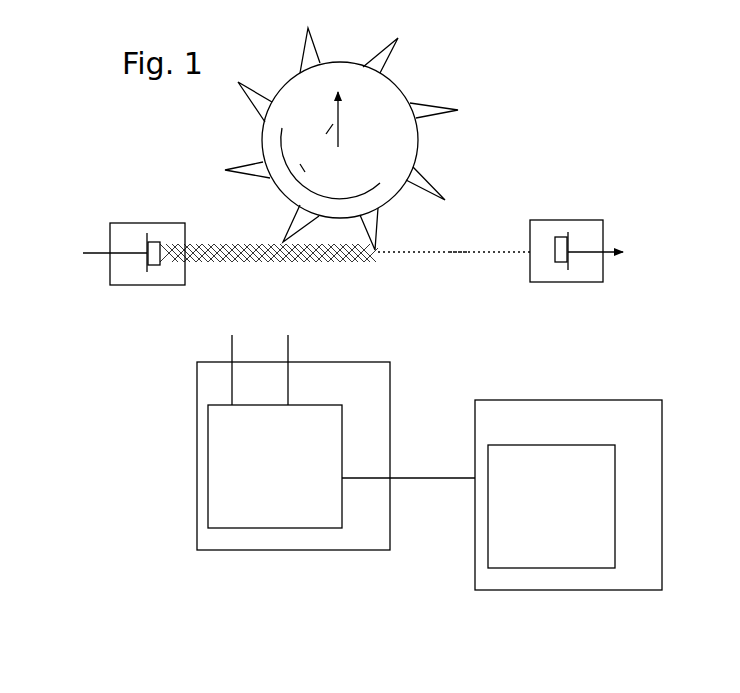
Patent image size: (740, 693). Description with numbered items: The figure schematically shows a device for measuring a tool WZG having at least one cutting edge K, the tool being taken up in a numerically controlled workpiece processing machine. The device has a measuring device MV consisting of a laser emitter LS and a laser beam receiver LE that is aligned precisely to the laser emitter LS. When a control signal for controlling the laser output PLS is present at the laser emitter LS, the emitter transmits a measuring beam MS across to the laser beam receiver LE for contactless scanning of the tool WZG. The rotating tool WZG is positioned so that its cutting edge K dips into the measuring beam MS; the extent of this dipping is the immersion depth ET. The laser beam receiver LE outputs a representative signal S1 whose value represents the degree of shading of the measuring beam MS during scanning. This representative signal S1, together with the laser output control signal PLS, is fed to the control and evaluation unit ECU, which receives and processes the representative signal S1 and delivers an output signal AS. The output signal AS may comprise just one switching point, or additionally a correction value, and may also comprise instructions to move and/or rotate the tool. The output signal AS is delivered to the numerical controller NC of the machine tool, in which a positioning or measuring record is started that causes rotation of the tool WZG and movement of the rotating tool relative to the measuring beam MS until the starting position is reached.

The tool WZG is at (335, 135).
The cutting edge K is at (461, 101).
The measuring device MV is at (532, 133).
The measuring beam MS is at (268, 245).
The immersion depth ET is at (459, 243).
The laser emitter LS is at (134, 288).
The laser beam receiver LE is at (570, 285).
The control signal for controlling the laser output PLS is at (146, 325).
The representative signal S1 is at (465, 324).
The control and evaluation unit ECU is at (275, 466).
The output signal AS is at (408, 465).
The numerical controller NC is at (568, 495).